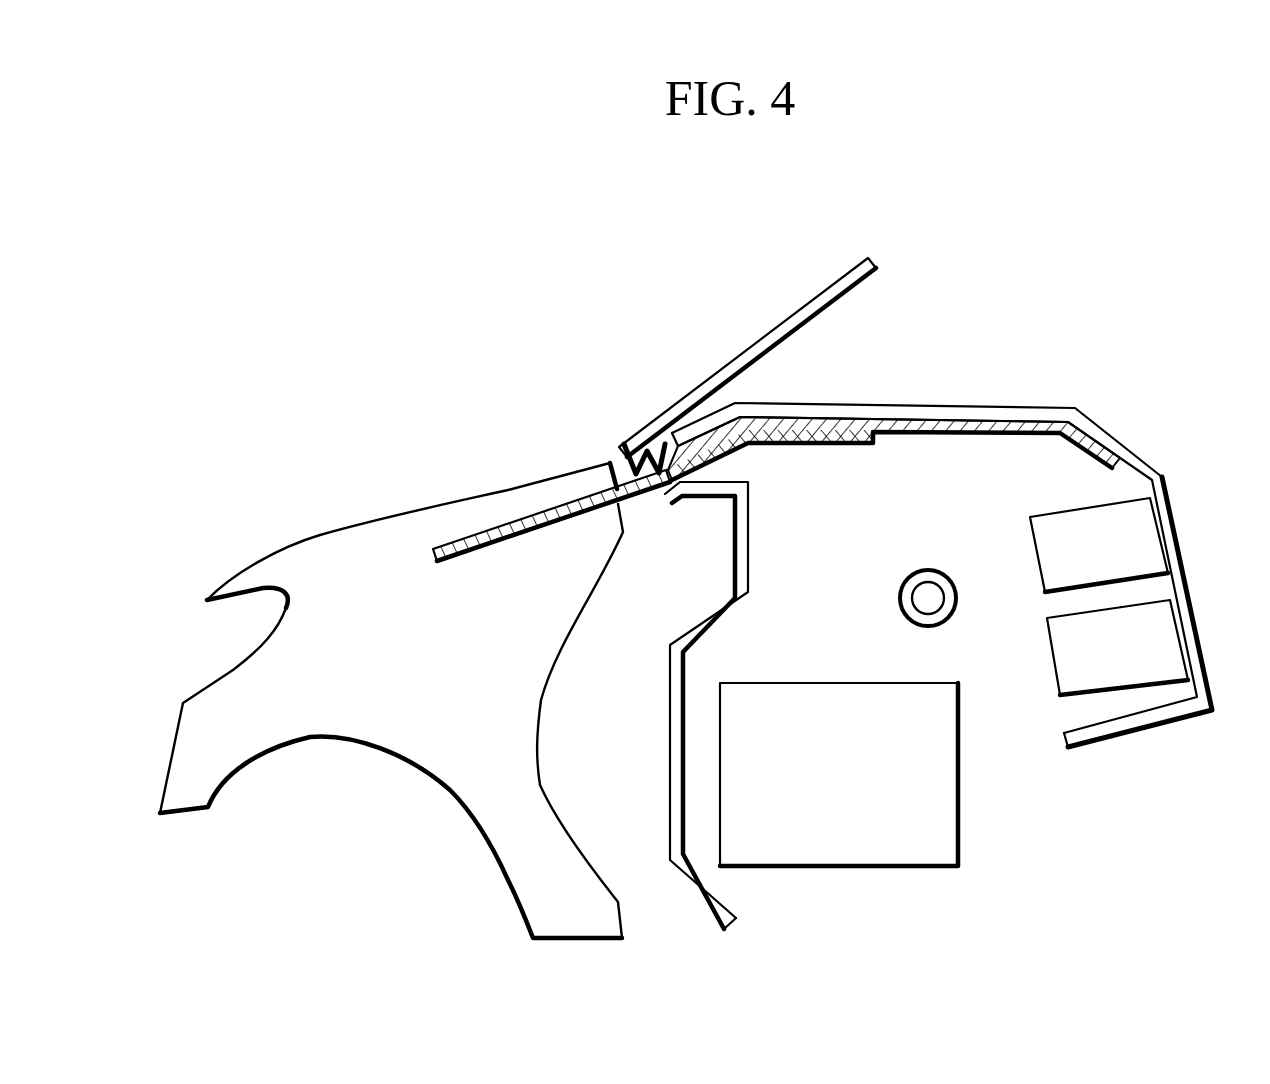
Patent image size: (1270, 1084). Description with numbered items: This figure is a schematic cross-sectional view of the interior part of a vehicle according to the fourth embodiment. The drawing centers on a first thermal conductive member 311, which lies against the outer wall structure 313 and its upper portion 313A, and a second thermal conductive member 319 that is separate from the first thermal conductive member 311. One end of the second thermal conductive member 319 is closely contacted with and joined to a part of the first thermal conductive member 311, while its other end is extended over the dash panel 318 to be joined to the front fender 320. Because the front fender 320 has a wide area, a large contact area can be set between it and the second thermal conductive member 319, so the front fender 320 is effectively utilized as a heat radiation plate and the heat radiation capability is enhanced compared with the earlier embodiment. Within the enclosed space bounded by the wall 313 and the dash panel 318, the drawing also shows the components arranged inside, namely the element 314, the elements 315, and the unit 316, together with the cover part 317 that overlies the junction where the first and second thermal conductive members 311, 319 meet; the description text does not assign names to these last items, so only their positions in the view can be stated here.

The first thermal conductive member 311 is at (958, 436).
The heat radiating plate 313 is at (945, 541).
The upper portion of heat radiating plate 313A is at (930, 402).
The boss 314 is at (903, 580).
The ribs 315 is at (1050, 586).
The electronic component 316 is at (960, 803).
The grip cover 317 is at (731, 362).
The dash panel 318 is at (667, 748).
The second thermal conductive member 319 is at (501, 550).
The front fender 320 is at (396, 755).